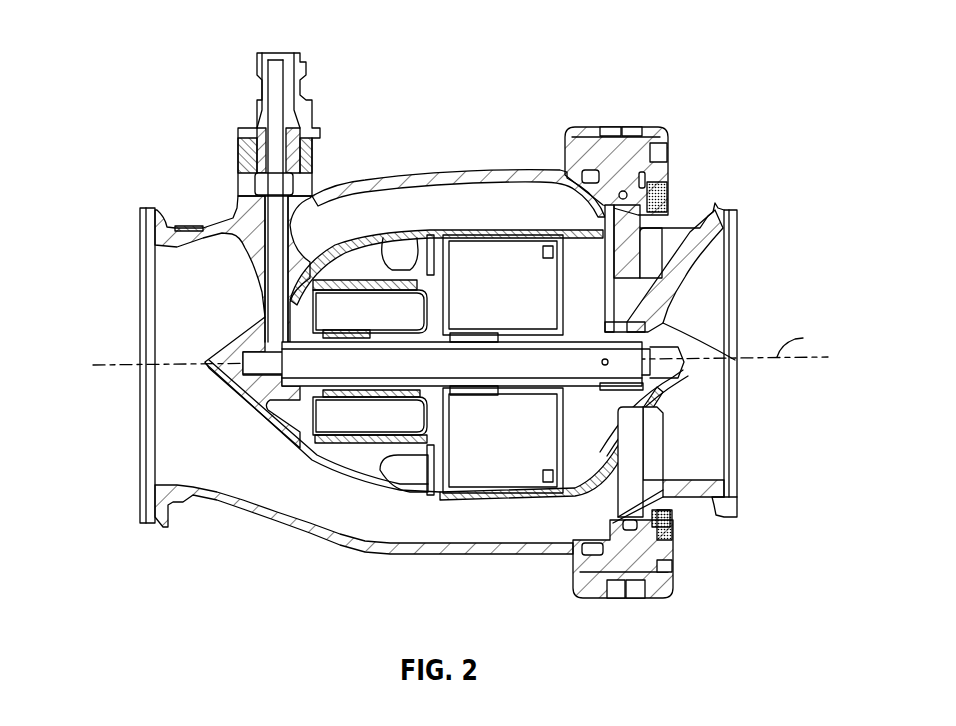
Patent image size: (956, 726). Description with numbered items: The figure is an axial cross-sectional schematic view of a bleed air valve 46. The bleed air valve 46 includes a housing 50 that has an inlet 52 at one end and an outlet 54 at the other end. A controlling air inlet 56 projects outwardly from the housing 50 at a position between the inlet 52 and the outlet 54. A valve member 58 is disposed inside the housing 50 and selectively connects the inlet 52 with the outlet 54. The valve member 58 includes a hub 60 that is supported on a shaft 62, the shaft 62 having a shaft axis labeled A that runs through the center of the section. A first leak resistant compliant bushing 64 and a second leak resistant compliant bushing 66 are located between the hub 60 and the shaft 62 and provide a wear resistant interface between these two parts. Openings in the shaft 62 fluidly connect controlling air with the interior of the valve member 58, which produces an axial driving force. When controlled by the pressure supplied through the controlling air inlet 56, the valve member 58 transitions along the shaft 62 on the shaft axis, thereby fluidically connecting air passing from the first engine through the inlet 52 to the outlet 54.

The bleed air valve 46 is at (125, 70).
The housing 50 is at (446, 562).
The inlet 52 is at (160, 485).
The outlet 54 is at (713, 477).
The controlling air inlet 56 is at (297, 113).
The valve member 58 is at (481, 505).
The hub 60 is at (403, 406).
The shaft 62 is at (530, 389).
The first leak resistant compliant bushing 64 is at (345, 330).
The second leak resistant compliant bushing 66 is at (487, 331).